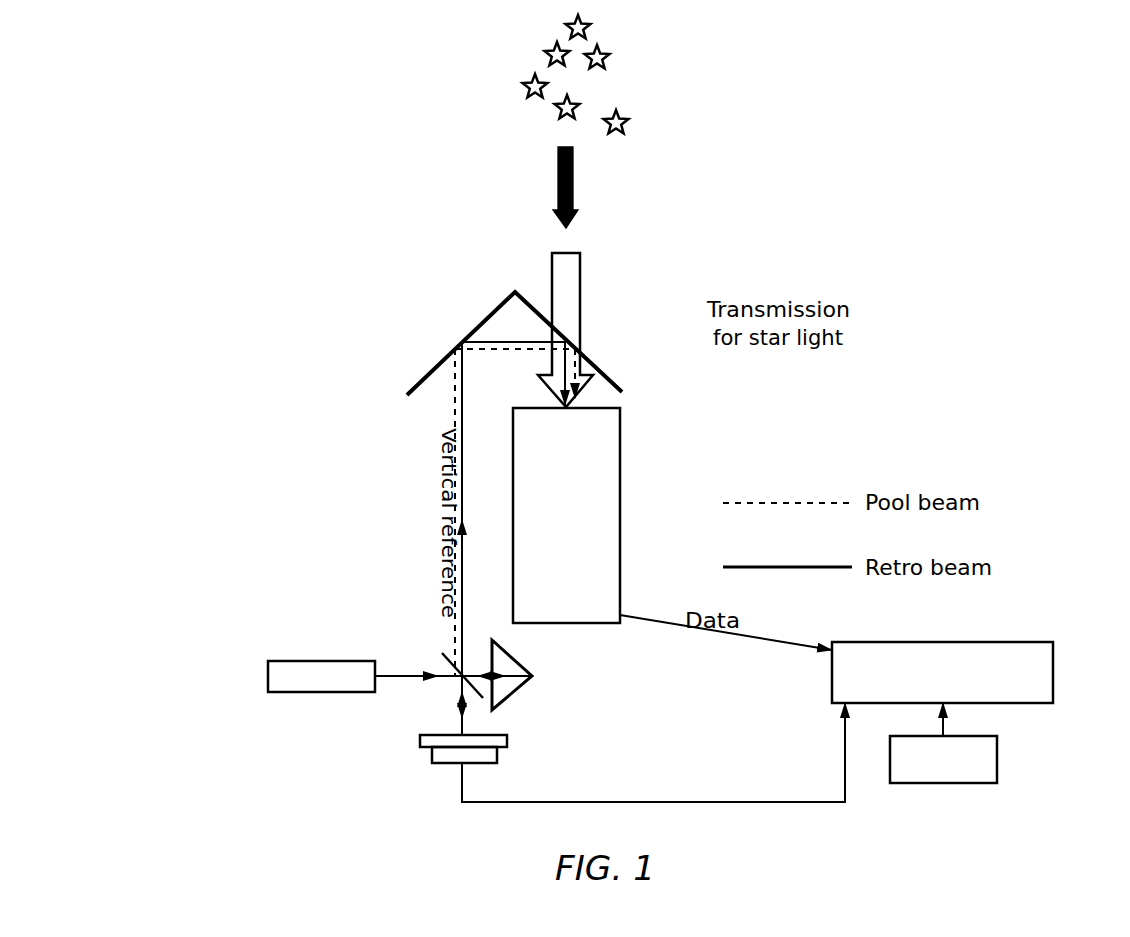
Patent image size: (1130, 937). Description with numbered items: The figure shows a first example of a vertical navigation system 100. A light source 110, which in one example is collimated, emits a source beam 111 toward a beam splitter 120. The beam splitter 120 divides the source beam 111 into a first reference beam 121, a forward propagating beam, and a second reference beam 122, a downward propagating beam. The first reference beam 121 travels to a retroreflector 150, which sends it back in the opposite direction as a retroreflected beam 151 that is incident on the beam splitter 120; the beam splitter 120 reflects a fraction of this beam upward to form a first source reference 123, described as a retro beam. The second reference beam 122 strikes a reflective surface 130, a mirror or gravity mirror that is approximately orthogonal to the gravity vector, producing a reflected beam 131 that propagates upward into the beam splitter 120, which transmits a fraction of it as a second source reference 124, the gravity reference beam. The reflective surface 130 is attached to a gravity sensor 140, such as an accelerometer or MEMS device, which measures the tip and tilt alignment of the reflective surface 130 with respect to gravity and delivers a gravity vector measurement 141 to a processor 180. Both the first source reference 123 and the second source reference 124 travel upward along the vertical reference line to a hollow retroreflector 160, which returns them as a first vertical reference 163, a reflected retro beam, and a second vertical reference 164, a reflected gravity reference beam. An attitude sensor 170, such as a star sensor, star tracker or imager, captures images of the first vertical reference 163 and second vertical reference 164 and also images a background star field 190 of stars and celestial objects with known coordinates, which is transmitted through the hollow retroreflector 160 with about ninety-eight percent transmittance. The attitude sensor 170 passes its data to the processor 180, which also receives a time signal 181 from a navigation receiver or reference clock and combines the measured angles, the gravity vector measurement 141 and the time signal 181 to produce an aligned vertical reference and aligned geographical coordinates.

The vertical navigation system 100 is at (292, 142).
The light source 110 is at (297, 658).
The source beam 111 is at (408, 670).
The beam splitter 120 is at (448, 685).
The first reference beam 121 is at (523, 667).
The second reference beam 122 is at (468, 718).
The first source reference 123 is at (472, 468).
The second source reference 124 is at (453, 385).
The reflective surface 130 is at (507, 744).
The reflected beam 131 is at (453, 702).
The gravity sensor 140 is at (483, 757).
The gravity vector measurement 141 is at (853, 792).
The retroreflector 150 is at (537, 678).
The retroreflected beam 151 is at (483, 665).
The hollow retroreflector 160 is at (460, 327).
The first vertical reference 163 is at (550, 364).
The second vertical reference 164 is at (588, 383).
The attitude sensor 170 is at (581, 531).
The processor 180 is at (961, 696).
The time signal 181 is at (961, 773).
The background star field 190 is at (632, 63).